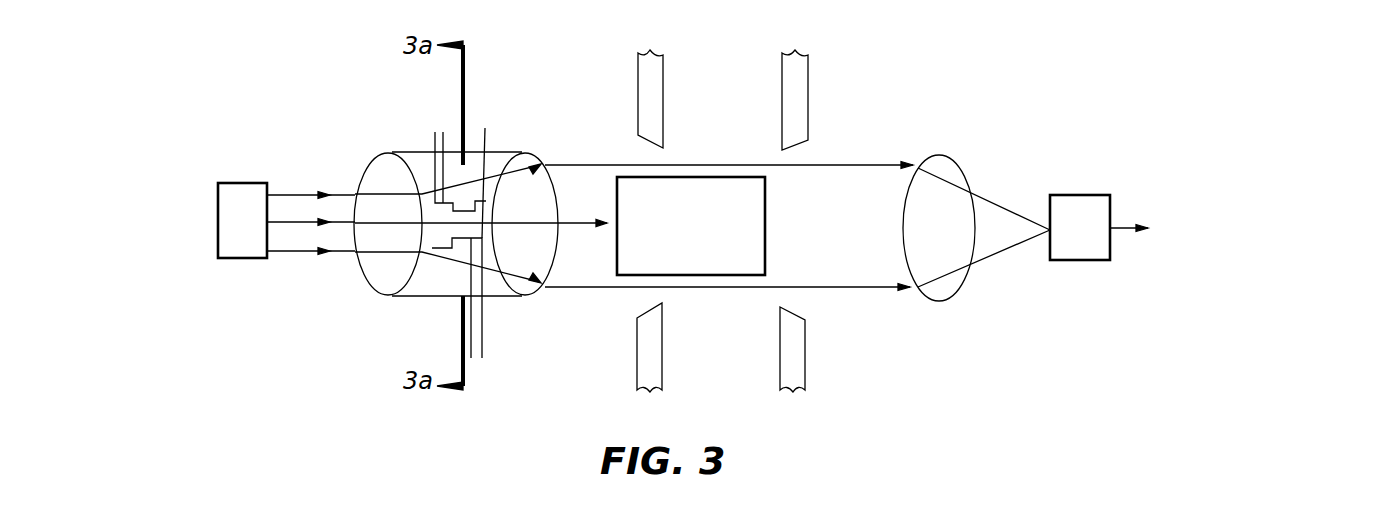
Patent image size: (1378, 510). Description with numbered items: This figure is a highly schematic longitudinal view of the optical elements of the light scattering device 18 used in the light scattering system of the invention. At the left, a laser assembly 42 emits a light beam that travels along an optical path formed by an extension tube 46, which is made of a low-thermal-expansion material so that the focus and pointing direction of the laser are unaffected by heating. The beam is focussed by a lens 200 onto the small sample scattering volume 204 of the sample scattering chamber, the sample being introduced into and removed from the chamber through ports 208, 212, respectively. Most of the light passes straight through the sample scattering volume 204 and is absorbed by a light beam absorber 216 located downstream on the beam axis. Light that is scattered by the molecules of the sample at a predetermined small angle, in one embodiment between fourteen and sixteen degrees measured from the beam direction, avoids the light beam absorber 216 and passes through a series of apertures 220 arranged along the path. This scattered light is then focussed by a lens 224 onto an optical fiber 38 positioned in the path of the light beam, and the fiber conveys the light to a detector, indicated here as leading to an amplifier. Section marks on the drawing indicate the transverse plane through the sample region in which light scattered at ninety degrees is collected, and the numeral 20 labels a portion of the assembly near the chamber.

The light scattering device 18 is at (908, 122).
The housing 20 is at (505, 310).
The optical fiber 38 is at (1187, 227).
The laser assembly 42 is at (248, 259).
The extension tube 46 is at (320, 273).
The lens 200 is at (376, 292).
The sample scattering volume 204 is at (494, 108).
The port 208 is at (433, 133).
The port 212 is at (484, 312).
The light beam absorber 216 is at (570, 163).
The apertures 220 is at (650, 85).
The lens 224 is at (948, 302).